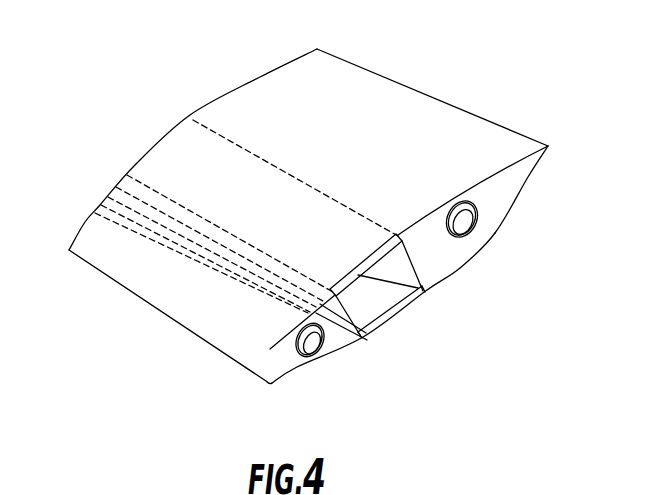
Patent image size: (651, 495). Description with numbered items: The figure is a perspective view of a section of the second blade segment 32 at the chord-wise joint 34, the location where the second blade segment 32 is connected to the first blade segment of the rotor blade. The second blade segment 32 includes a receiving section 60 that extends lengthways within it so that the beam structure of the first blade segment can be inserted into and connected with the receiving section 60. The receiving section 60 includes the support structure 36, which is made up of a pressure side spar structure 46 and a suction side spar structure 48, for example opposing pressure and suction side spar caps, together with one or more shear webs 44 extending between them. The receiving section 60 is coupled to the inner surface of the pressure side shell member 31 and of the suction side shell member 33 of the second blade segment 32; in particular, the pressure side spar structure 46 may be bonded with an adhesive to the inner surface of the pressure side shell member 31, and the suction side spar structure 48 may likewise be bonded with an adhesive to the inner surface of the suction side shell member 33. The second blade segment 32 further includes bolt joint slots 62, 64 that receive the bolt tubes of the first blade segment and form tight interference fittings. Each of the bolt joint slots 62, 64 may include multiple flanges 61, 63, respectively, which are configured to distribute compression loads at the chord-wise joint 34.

The pressure side shell member 31 is at (526, 177).
The second blade segment 32 is at (393, 83).
The suction side shell member 33 is at (258, 98).
The chord-wise joint 34 is at (300, 392).
The support structure 36 is at (285, 182).
The shear web 44 is at (404, 283).
The pressure side spar structure 46 is at (378, 337).
The suction side spar structure 48 is at (358, 262).
The receiving section 60 is at (385, 298).
The flange 61 is at (298, 325).
The bolt joint slot 62 is at (313, 347).
The flange 63 is at (453, 202).
The bolt joint slot 64 is at (463, 222).